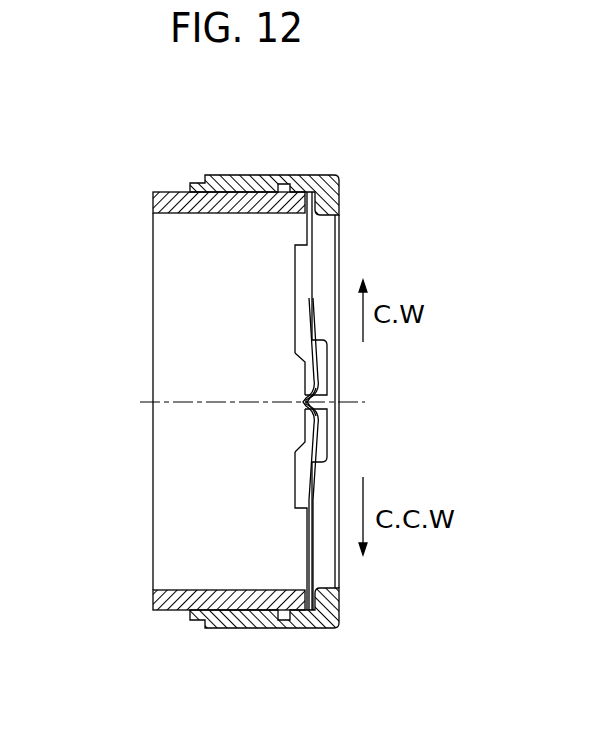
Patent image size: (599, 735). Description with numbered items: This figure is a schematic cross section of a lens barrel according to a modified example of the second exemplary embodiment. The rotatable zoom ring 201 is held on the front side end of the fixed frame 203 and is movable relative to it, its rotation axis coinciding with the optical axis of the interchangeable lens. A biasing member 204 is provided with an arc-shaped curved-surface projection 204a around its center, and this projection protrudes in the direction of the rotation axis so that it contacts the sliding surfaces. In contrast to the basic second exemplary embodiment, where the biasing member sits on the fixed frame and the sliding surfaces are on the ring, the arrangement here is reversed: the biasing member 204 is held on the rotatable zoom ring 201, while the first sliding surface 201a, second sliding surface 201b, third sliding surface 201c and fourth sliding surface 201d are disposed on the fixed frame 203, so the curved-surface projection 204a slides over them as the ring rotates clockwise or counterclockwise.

The zoom ring 201 is at (313, 190).
The first sliding surface 201a is at (296, 262).
The second sliding surface 201b is at (300, 405).
The third sliding surface 201c is at (294, 322).
The fourth sliding surface 201d is at (293, 445).
The fixed frame 203 is at (167, 203).
The biasing member 204 is at (311, 298).
The curved-surface projection 204a is at (313, 401).